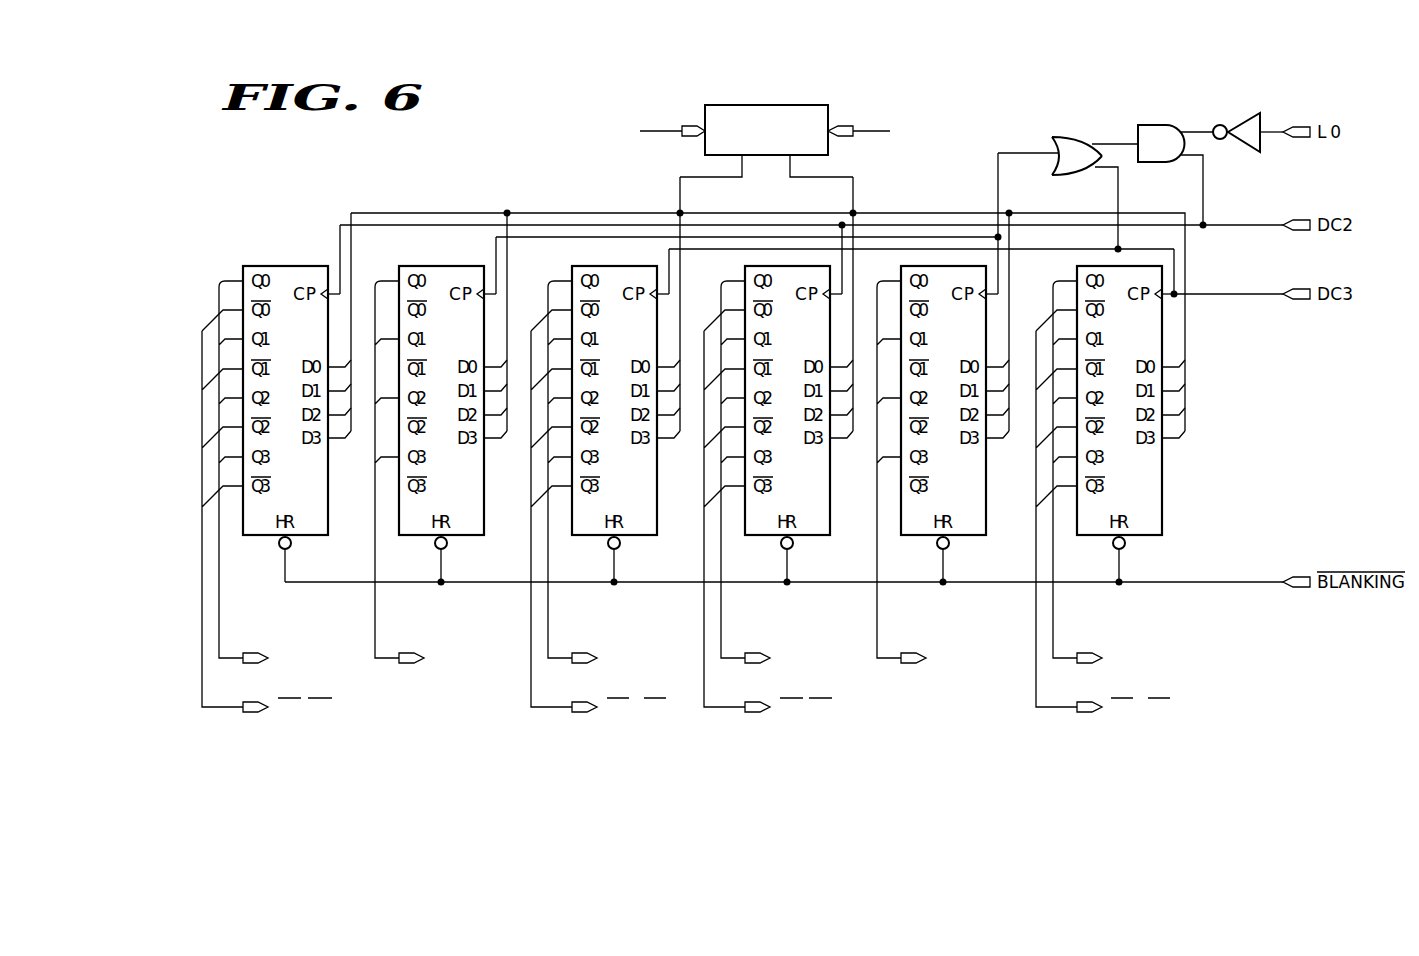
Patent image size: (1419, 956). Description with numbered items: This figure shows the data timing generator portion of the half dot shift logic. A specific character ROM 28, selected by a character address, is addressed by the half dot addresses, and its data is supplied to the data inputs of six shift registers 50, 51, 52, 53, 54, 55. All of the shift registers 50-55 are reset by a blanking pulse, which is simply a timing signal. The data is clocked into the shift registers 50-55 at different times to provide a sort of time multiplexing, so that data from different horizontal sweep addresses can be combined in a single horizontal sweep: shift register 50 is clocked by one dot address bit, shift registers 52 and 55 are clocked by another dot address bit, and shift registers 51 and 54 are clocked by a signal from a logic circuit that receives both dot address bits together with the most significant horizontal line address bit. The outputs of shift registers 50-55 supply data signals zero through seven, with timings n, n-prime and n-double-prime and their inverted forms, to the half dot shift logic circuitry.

The character ROM 28 is at (746, 107).
The shift register 50 is at (316, 537).
The shift register 51 is at (472, 537).
The shift register 52 is at (645, 537).
The shift register 53 is at (818, 537).
The shift register 54 is at (974, 537).
The shift register 55 is at (1150, 537).